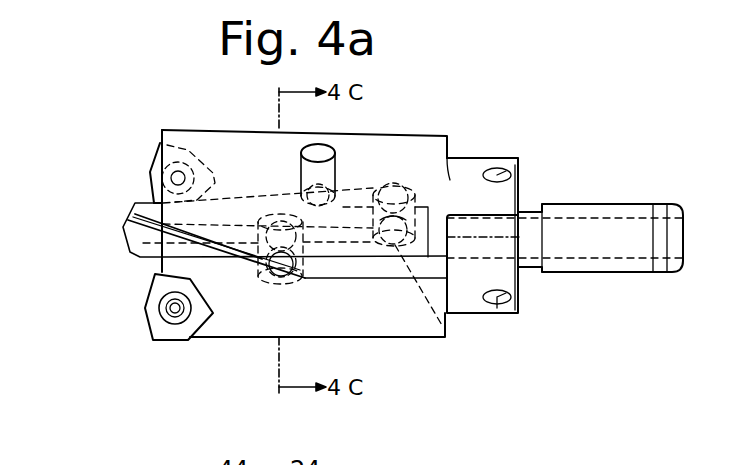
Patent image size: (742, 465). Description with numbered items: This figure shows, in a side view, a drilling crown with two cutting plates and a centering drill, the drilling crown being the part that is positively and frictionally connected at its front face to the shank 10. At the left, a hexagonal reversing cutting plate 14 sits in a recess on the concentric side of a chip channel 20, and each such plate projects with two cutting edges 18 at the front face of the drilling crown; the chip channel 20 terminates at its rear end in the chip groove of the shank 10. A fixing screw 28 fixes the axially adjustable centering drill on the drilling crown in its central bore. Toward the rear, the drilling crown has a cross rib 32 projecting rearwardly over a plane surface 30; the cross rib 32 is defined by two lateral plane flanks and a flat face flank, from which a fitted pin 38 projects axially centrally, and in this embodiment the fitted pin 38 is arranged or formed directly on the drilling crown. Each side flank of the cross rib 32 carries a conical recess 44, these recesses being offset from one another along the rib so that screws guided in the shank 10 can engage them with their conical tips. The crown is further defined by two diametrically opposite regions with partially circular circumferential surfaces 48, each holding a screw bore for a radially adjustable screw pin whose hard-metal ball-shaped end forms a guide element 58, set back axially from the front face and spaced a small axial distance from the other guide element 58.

The shank 10 is at (160, 148).
The reversing cutting plate 14 is at (153, 315).
The cutting edges 18 is at (147, 328).
The chip channel 20 is at (368, 310).
The fixing screw 28 is at (455, 340).
The plane surface 30 is at (450, 148).
The cross rib 32 is at (467, 188).
The fitted pin 38 is at (617, 232).
The conical recess 44 is at (511, 172).
The partially circular circumferential surface 48 is at (400, 162).
The guide element 58 is at (322, 157).